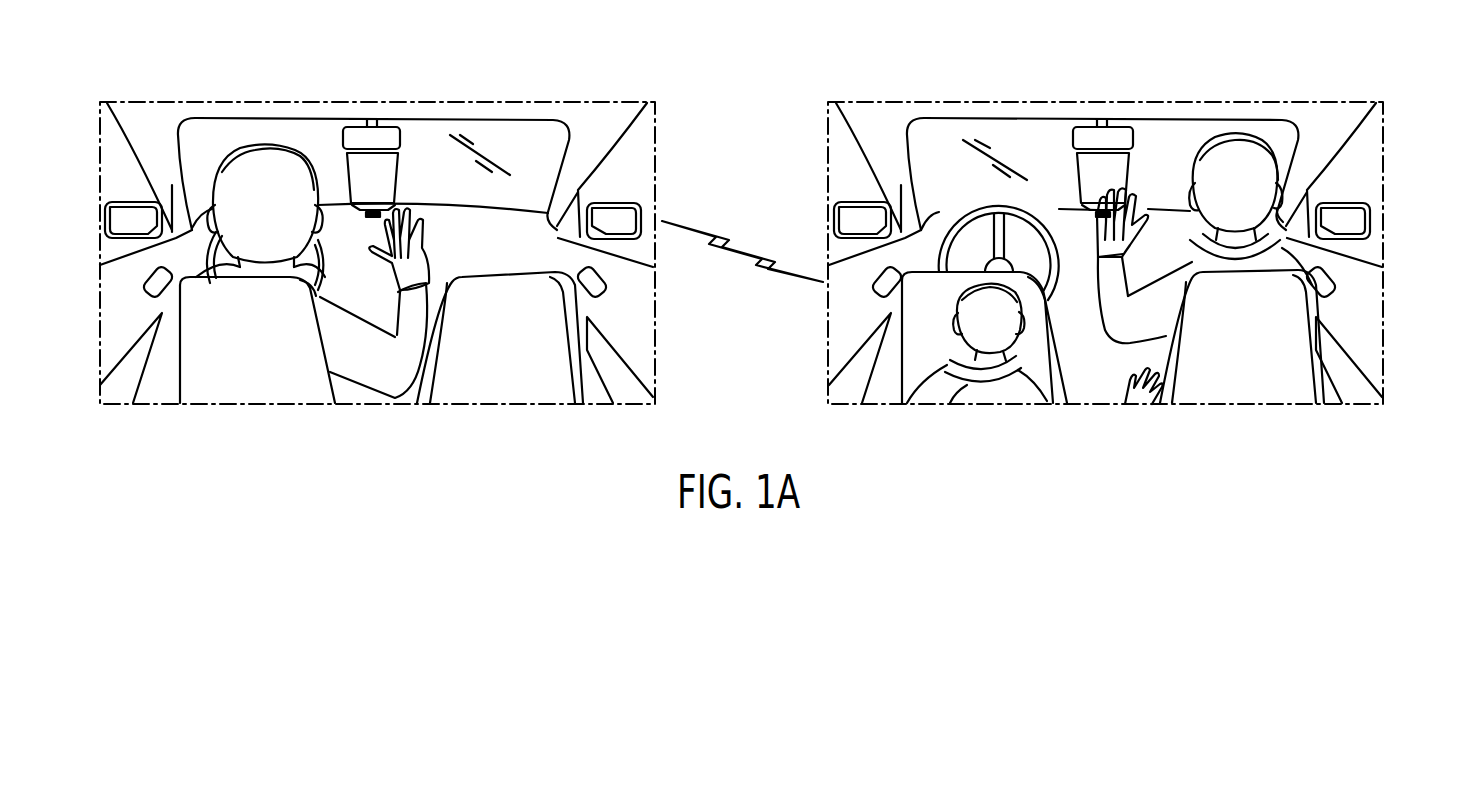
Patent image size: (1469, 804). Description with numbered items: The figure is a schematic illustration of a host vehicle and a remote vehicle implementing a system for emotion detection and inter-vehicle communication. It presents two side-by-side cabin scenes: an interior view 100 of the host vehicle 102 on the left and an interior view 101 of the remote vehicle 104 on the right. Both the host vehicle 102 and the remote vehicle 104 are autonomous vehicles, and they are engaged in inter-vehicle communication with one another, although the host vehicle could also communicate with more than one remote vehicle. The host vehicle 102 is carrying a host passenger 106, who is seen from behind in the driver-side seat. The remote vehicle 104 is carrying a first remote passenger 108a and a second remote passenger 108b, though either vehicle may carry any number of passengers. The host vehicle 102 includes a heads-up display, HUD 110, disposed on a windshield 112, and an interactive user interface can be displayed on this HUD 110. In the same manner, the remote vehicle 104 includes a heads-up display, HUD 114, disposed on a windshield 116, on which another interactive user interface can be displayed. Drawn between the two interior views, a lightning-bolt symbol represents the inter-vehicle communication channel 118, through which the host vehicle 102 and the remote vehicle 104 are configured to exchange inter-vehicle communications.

The interior view 100 is at (607, 46).
The interior view 101 is at (1365, 52).
The host vehicle 102 is at (194, 100).
The remote vehicle 104 is at (906, 103).
The host passenger 106 is at (263, 170).
The first remote passenger 108a is at (1245, 170).
The second remote passenger 108b is at (966, 385).
The heads-up display (HUD) 110 is at (413, 165).
The windshield 112 is at (512, 148).
The heads-up display (HUD) 114 is at (1133, 178).
The windshield 116 is at (1031, 146).
The inter-vehicle communication channel 118 is at (735, 245).